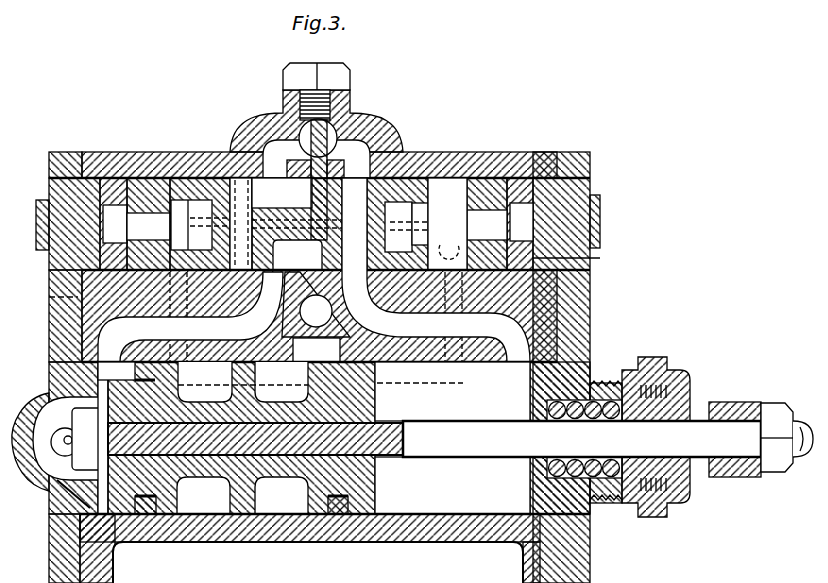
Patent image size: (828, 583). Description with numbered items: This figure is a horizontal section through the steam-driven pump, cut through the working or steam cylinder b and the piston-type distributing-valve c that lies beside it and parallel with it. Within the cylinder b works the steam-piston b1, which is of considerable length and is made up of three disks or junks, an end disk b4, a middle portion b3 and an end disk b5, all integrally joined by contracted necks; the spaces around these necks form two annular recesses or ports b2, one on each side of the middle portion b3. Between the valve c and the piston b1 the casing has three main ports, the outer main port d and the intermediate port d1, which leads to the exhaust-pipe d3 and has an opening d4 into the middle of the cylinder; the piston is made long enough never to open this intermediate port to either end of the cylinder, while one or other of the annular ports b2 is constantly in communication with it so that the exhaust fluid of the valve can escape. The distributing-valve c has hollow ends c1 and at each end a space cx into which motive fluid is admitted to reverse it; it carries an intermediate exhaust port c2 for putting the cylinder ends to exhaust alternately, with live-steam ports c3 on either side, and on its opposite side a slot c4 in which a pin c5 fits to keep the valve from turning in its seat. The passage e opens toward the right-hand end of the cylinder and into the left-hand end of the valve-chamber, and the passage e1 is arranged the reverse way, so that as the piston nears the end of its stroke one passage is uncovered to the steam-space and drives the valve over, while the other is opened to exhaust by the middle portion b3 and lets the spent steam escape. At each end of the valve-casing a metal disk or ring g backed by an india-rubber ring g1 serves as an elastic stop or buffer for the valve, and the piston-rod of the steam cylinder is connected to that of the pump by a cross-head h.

The working or steam cylinder b is at (452, 485).
The steam-piston b1 is at (460, 437).
The annular recesses or ports b2 is at (242, 495).
The middle portion of piston b3 is at (240, 514).
The end disk of piston b4 is at (163, 514).
The end disk of piston b5 is at (357, 514).
The distributing-valve c is at (297, 224).
The hollow ends of valve c1 is at (299, 224).
The intermediate exhaust port of valve c2 is at (297, 255).
The live-steam ports c3 is at (295, 224).
The passage or slot c4 is at (282, 193).
The pin c5 is at (350, 118).
The end space of valve cx is at (49, 183).
The main port or passage d is at (314, 270).
The intermediate port d1 is at (316, 304).
The exhaust-pipe d3 is at (316, 311).
The opening d4 is at (316, 350).
The passage e is at (354, 391).
The passage e1 is at (478, 380).
The metal disk or ring g is at (486, 185).
The india-rubber ring g1 is at (358, 225).
The cross-head h is at (740, 402).